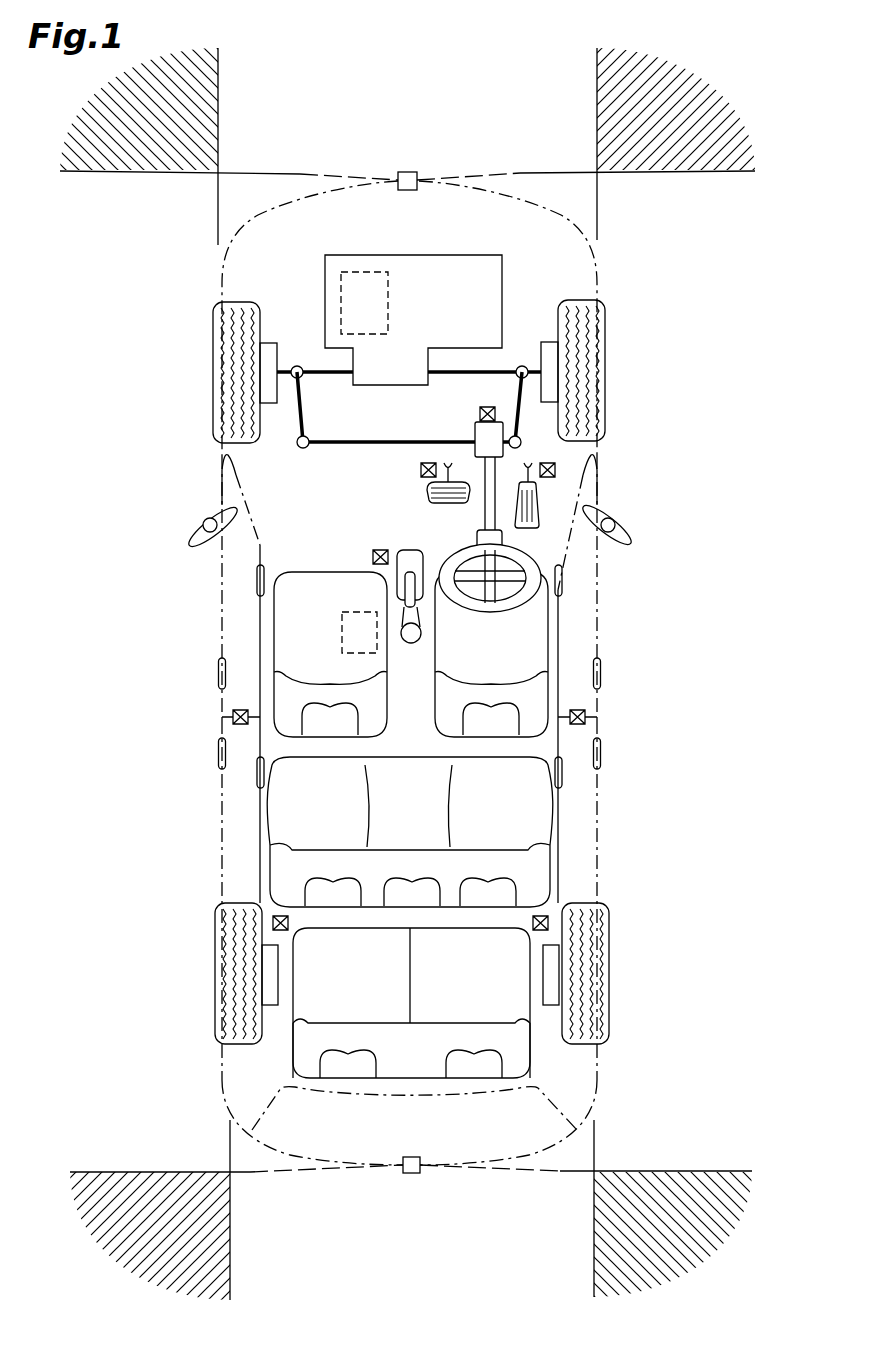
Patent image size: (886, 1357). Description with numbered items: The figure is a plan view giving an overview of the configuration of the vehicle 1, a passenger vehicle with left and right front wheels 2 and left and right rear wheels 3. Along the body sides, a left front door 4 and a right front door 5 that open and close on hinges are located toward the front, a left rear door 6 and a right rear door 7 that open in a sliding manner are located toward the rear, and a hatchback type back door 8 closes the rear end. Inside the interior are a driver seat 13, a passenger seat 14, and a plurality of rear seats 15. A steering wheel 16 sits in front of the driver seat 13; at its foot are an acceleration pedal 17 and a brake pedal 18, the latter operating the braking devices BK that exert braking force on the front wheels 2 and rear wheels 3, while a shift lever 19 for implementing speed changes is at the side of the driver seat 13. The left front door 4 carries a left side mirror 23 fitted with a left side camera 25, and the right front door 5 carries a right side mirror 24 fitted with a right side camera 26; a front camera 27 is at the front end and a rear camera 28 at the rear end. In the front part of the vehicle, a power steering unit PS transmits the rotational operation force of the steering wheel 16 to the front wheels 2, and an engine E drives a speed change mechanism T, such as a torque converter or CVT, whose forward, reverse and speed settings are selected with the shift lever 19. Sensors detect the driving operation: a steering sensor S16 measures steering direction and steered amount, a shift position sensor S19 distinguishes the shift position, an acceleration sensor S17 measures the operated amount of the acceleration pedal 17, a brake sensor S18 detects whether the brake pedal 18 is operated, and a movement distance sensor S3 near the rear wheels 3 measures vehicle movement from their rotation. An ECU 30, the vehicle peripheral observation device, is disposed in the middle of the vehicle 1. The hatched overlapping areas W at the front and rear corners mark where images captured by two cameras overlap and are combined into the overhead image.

The vehicle 1 is at (218, 283).
The front wheels 2 is at (213, 375).
The rear wheels 3 is at (215, 970).
The left front door 4 is at (220, 578).
The right front door 5 is at (600, 645).
The left rear door 6 is at (220, 818).
The right rear door 7 is at (600, 818).
The back door 8 is at (597, 1078).
The driver seat 13 is at (524, 656).
The passenger seat 14 is at (321, 656).
The rear seats 15 is at (375, 757).
The steering wheel 16 is at (485, 612).
The acceleration pedal 17 is at (532, 528).
The brake pedal 18 is at (457, 503).
The shift lever 19 is at (415, 643).
The left side mirror 23 is at (200, 507).
The right side mirror 24 is at (620, 525).
The left side camera 25 is at (190, 538).
The right side camera 26 is at (612, 535).
The front camera 27 is at (408, 172).
The rear camera 28 is at (411, 1173).
The ECU 30 is at (352, 612).
The engine E is at (428, 255).
The speed change mechanism T is at (341, 300).
The braking devices BK is at (268, 403).
The power steering unit PS is at (475, 435).
The steering sensor S16 is at (488, 407).
The acceleration sensor S17 is at (555, 468).
The brake sensor S18 is at (421, 470).
The shift position sensor S19 is at (382, 550).
The movement distance sensor S3 is at (287, 932).
The overlapping areas W is at (125, 140).